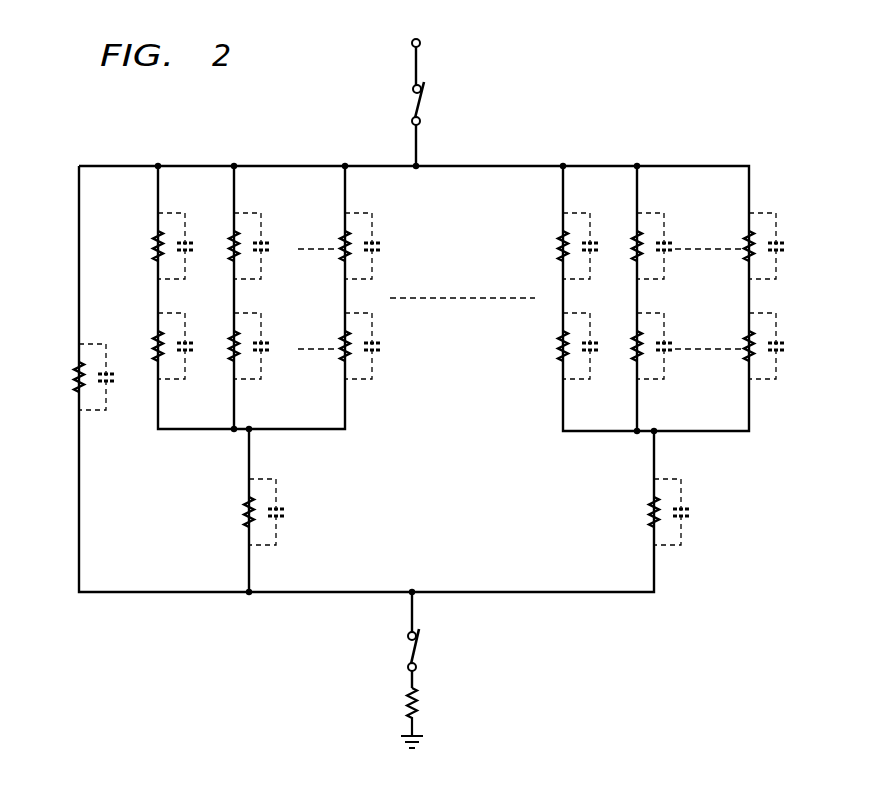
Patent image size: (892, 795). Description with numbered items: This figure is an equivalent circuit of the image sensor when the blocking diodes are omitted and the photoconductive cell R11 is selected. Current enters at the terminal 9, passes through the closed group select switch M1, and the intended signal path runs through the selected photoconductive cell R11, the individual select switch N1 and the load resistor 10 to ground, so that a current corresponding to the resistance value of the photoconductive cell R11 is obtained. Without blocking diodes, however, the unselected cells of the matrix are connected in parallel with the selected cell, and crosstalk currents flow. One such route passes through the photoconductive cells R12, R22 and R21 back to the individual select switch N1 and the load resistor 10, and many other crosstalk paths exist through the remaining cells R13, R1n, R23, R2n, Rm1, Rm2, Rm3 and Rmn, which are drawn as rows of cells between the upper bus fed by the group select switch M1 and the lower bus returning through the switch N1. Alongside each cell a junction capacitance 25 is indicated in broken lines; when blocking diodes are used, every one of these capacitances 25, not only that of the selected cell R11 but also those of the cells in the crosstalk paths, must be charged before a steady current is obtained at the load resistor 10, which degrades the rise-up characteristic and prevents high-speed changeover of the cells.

The terminal 9 is at (421, 43).
The group select switch M1 is at (420, 98).
The individual select switch N1 is at (416, 645).
The load resistor 10 is at (418, 703).
The junction capacitance 25 is at (114, 378).
The photoconductive cell R11 is at (76, 380).
The photoconductive cell R12 is at (155, 249).
The photoconductive cell R13 is at (231, 249).
The photoconductive cell R1n is at (342, 249).
The photoconductive cell R21 is at (246, 515).
The photoconductive cell R22 is at (155, 349).
The photoconductive cell R23 is at (231, 349).
The photoconductive cell R2n is at (342, 349).
The photoconductive cell Rm1 is at (651, 515).
The photoconductive cell Rm2 is at (560, 349).
The photoconductive cell Rm3 is at (634, 349).
The photoconductive cell Rmn is at (746, 349).